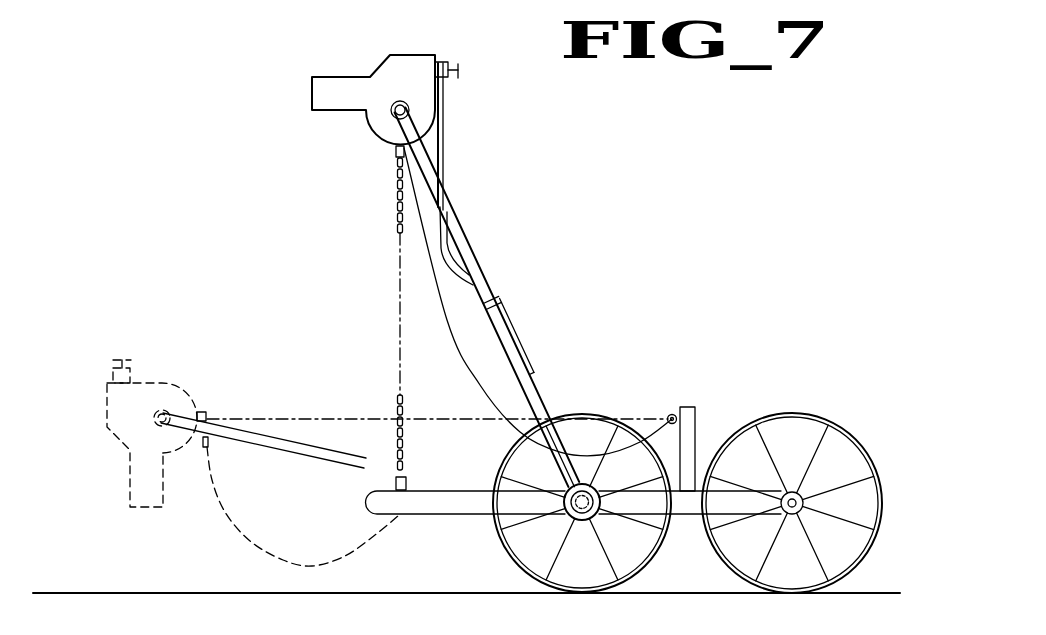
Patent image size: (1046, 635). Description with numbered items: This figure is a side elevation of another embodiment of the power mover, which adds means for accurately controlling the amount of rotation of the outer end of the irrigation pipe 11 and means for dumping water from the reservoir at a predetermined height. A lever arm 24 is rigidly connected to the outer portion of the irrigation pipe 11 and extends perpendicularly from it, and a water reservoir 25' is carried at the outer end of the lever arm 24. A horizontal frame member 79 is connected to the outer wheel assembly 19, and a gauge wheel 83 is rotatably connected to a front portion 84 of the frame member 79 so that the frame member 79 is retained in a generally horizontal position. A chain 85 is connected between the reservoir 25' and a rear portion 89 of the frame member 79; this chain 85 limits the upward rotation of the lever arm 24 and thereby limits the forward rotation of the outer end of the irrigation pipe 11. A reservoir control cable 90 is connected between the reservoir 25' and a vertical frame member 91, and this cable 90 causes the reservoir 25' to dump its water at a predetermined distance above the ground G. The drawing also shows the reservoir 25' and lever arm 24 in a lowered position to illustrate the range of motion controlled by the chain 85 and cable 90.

The reservoir 25' is at (255, 281).
The chain 85 is at (397, 183).
The lever arm 24 is at (460, 224).
The reservoir control cable 90 is at (448, 323).
The irrigation pipe 11 is at (584, 480).
The vertical frame member 91 is at (695, 420).
The horizontal frame member 79 is at (440, 490).
The outer wheel assembly 19 is at (494, 554).
The gauge wheel 83 is at (837, 424).
The front portion 84 is at (790, 513).
The rear portion 89 is at (373, 507).
The ground G is at (268, 592).